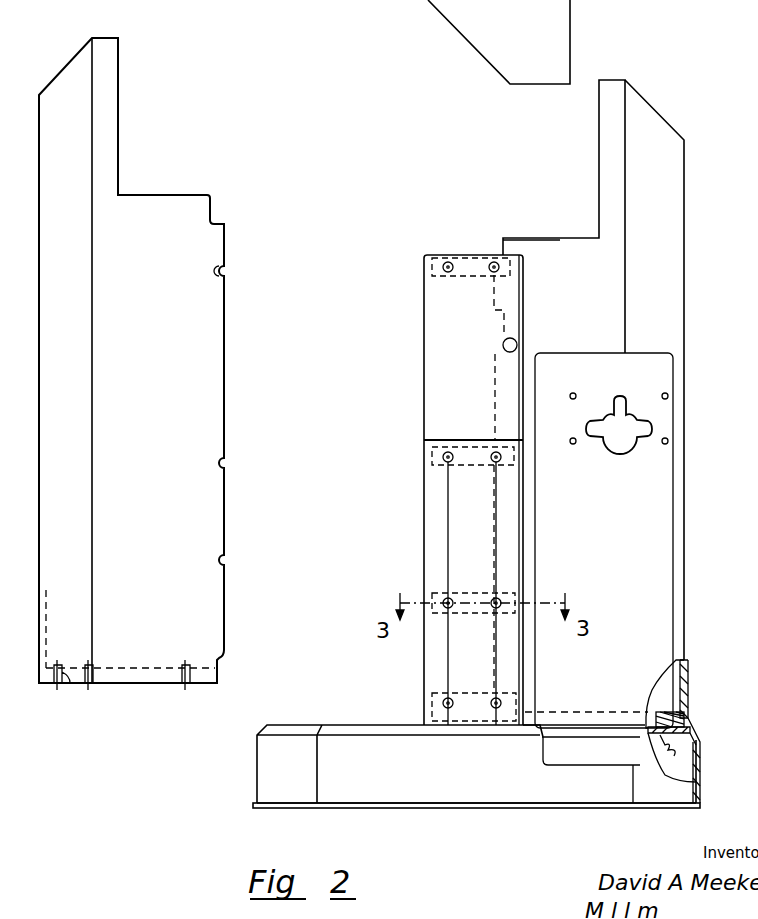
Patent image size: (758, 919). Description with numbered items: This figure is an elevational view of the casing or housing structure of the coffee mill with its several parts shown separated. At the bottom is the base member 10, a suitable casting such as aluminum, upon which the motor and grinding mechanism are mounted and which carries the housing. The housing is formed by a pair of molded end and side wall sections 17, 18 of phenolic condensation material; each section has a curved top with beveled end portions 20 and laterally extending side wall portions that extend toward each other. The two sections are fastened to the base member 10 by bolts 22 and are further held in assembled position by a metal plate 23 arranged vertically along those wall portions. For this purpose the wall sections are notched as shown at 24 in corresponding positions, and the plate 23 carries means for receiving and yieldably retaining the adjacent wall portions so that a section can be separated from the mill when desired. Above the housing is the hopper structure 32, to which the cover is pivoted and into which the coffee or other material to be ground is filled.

The base member 10 is at (270, 766).
The end wall section 17 is at (212, 241).
The side wall section 18 is at (612, 160).
The beveled end portion 20 is at (660, 168).
The bolt 22 is at (690, 718).
The metal plate 23 is at (438, 389).
The notch 24 is at (228, 271).
The hopper structure 32 is at (553, 37).